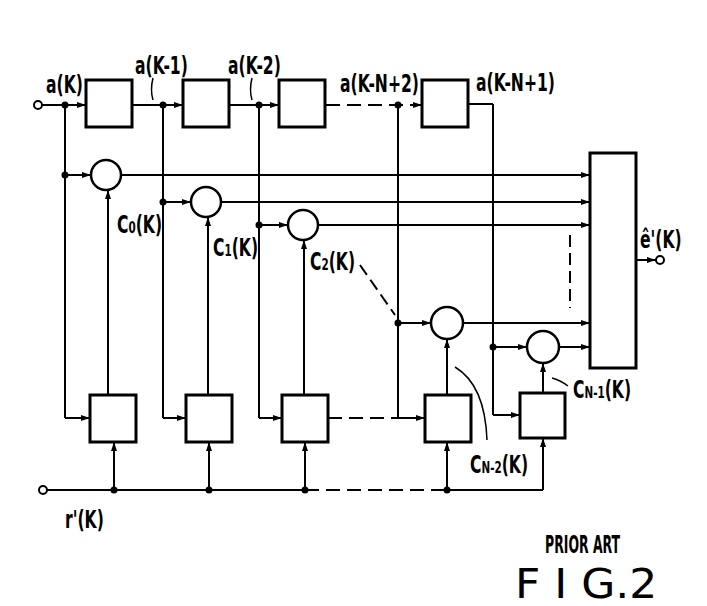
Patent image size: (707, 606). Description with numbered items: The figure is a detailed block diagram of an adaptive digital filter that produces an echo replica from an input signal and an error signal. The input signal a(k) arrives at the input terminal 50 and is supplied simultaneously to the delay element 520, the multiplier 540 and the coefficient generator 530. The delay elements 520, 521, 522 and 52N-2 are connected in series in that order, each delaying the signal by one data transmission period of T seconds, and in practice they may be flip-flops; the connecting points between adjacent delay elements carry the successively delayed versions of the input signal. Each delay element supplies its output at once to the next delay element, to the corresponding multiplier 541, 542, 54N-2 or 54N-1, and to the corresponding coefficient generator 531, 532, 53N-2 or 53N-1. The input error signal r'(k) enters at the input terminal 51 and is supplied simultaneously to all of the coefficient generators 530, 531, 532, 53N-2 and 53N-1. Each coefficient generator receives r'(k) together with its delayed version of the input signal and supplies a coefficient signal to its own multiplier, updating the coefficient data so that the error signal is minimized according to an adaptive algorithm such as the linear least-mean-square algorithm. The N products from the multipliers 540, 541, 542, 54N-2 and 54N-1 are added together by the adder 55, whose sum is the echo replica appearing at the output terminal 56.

The input terminal 50 is at (37, 98).
The input terminal 51 is at (43, 486).
The delay element 520 is at (112, 80).
The delay element 521 is at (205, 80).
The delay element 522 is at (300, 80).
The delay element 52N-2 is at (443, 80).
The coefficient generator 530 is at (124, 443).
The coefficient generator 531 is at (222, 443).
The coefficient generator 532 is at (318, 443).
The coefficient generator 53N-2 is at (432, 443).
The coefficient generator 53N-1 is at (555, 440).
The multiplier 540 is at (112, 161).
The multiplier 541 is at (203, 217).
The multiplier 542 is at (292, 240).
The multiplier 54N-2 is at (462, 293).
The multiplier 54N-1 is at (546, 331).
The adder 55 is at (603, 153).
The output terminal 56 is at (660, 265).